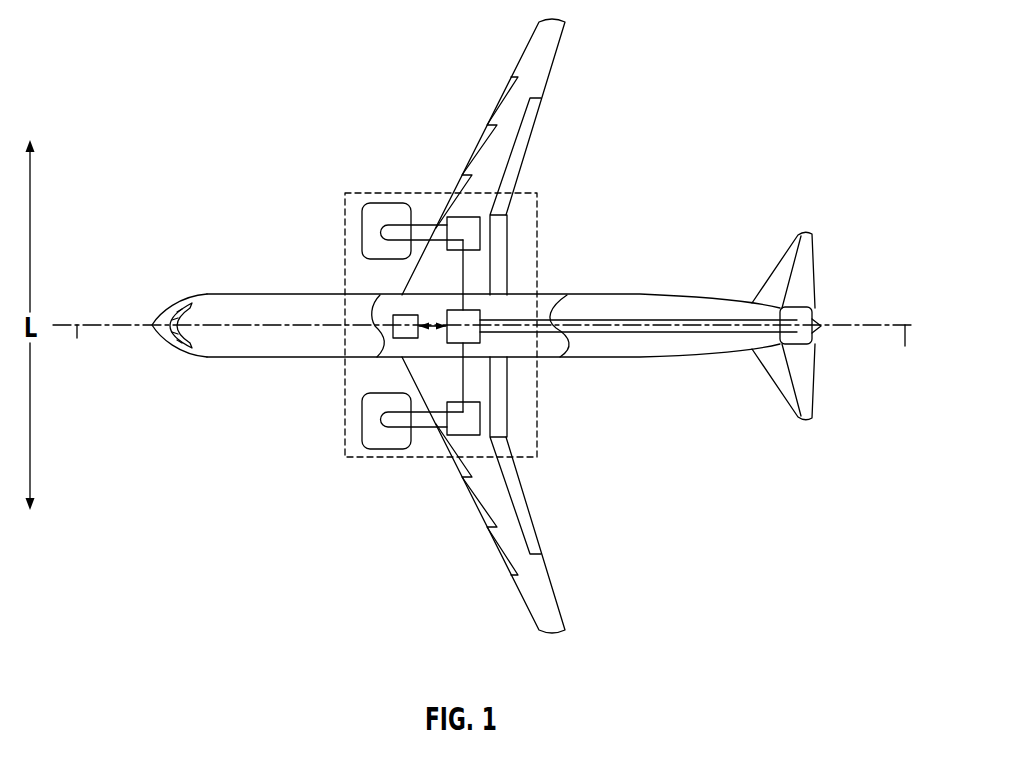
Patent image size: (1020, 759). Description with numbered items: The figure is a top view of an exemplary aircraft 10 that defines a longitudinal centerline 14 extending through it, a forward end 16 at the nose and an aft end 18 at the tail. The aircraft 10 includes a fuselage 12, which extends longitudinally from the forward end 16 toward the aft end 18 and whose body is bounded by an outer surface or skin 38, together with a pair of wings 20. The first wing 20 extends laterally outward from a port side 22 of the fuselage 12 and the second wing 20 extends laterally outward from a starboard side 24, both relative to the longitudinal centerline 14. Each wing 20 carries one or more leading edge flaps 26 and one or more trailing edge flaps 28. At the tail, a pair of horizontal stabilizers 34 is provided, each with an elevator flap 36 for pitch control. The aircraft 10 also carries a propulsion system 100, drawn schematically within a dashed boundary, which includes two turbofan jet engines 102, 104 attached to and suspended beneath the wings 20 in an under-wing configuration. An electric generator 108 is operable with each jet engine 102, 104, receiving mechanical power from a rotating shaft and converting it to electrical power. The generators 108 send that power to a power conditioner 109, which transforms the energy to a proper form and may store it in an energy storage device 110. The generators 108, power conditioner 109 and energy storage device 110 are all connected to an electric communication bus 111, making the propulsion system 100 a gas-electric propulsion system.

The aircraft 10 is at (677, 114).
The fuselage 12 is at (203, 344).
The longitudinal centerline 14 is at (489, 354).
The forward end 16 is at (149, 345).
The aft end 18 is at (774, 412).
The wings 20 is at (543, 46).
The port side 22 is at (279, 373).
The starboard side 24 is at (277, 283).
The leading edge flaps 26 is at (473, 502).
The trailing edge flaps 28 is at (529, 508).
The horizontal stabilizers 34 is at (790, 256).
The elevator flap 36 is at (806, 250).
The outer surface or skin 38 is at (631, 352).
The propulsion system 100 is at (326, 196).
The turbofan jet engine 102 is at (365, 449).
The turbofan jet engine 104 is at (377, 204).
The electric generator 108 is at (478, 229).
The power conditioner 109 is at (480, 316).
The energy storage device 110 is at (394, 339).
The electric communication bus 111 is at (524, 351).